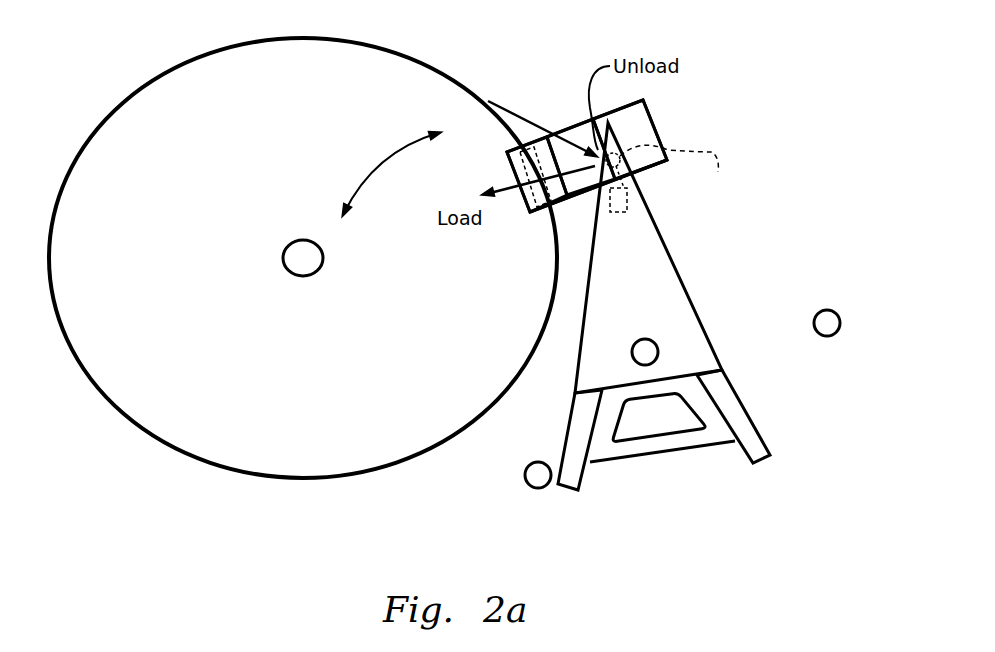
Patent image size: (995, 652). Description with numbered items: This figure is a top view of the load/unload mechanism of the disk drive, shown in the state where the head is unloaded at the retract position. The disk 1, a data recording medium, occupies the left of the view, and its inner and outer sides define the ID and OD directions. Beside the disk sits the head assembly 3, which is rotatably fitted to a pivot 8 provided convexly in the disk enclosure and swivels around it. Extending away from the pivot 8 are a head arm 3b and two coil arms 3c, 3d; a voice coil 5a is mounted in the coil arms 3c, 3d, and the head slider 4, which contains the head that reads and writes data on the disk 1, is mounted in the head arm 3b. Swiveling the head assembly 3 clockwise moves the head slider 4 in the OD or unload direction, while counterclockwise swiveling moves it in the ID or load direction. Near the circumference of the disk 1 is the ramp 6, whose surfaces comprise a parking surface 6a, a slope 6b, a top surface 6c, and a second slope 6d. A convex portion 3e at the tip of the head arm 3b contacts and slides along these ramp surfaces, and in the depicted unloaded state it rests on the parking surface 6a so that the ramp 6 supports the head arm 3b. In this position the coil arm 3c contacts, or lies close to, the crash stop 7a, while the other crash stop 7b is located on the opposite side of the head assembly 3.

The disk 1 is at (124, 77).
The head assembly 3 is at (670, 328).
The head arm 3b is at (657, 272).
The coil arm 3c is at (566, 489).
The coil arm 3d is at (757, 462).
The convex portion 3e is at (718, 172).
The head slider 4 is at (628, 198).
The voice coil 5a is at (661, 448).
The ramp 6 is at (624, 159).
The parking surface 6a is at (645, 140).
The slope 6b is at (560, 140).
The top surface 6c is at (537, 150).
The slope 6d is at (538, 212).
The crash stop 7a is at (542, 463).
The crash stop 7b is at (823, 334).
The pivot 8 is at (647, 348).